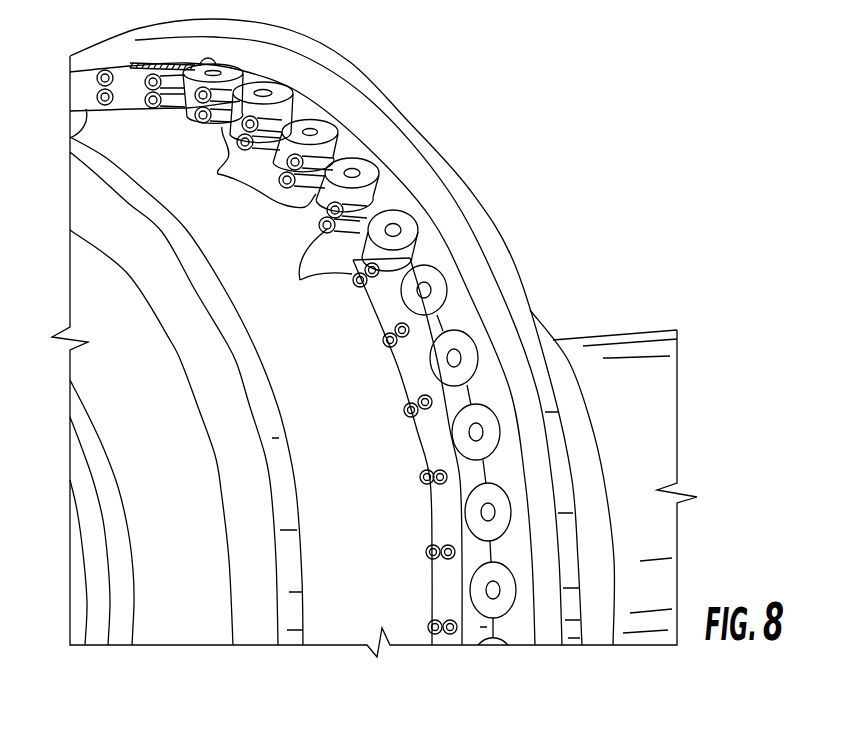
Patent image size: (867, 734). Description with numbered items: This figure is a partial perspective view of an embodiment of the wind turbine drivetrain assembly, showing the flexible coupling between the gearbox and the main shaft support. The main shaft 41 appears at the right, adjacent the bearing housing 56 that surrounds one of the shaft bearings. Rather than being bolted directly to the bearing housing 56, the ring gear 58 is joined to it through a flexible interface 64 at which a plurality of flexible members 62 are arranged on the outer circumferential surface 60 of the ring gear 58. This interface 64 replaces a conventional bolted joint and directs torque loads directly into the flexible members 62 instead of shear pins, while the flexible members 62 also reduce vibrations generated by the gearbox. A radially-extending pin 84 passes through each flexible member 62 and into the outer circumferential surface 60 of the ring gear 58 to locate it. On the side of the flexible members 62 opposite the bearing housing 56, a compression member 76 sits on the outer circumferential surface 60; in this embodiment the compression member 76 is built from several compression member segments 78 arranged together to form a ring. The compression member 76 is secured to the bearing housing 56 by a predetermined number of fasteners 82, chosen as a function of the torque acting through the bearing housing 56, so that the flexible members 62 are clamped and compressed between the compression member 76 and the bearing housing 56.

The main shaft 41 is at (625, 346).
The bearing housing 56 is at (405, 120).
The ring gear 58 is at (237, 231).
The outer circumferential surface 60 is at (157, 168).
The flexible member 62 is at (218, 174).
The interface 64 is at (482, 652).
The compression member 76 is at (398, 378).
The compression member segments 78 is at (70, 150).
The fasteners 82 is at (300, 280).
The radially-extending pin 84 is at (453, 360).